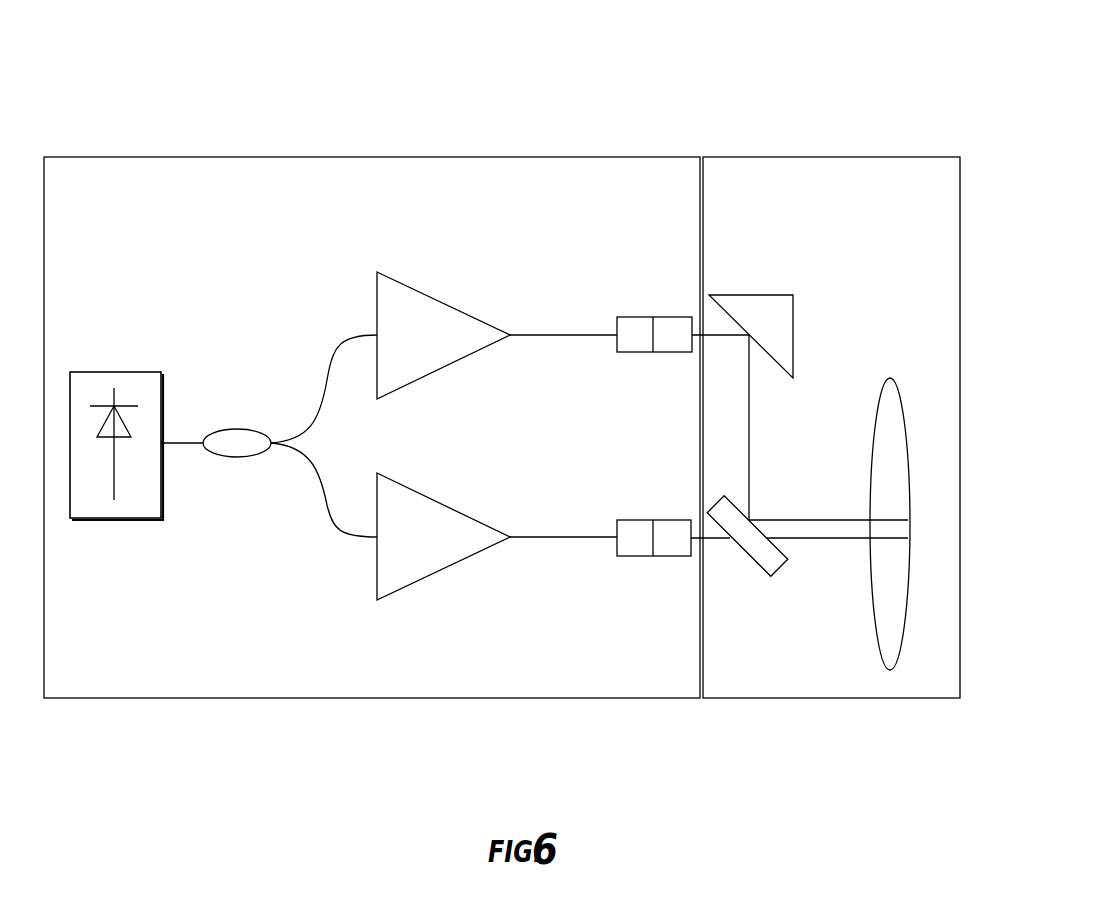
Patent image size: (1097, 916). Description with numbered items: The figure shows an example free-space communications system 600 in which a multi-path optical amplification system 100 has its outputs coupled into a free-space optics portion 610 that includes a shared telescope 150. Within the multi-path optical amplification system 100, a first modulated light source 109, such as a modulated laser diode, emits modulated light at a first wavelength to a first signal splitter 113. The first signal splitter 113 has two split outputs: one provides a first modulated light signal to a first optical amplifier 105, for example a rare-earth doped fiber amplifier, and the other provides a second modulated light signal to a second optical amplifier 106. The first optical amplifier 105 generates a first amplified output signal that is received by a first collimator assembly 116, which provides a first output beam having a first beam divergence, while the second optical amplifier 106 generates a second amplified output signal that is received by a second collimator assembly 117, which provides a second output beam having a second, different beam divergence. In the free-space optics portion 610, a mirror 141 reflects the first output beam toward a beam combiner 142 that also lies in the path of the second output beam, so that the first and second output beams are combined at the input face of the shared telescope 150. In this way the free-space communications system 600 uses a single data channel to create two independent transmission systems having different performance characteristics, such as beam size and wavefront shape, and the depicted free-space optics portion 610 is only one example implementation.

The multi-path optical amplification system 100 is at (307, 700).
The first optical amplifier 105 is at (413, 287).
The second optical amplifier 106 is at (413, 490).
The first modulated light source 109 is at (120, 520).
The first signal splitter 113 is at (240, 428).
The first collimator assembly 116 is at (638, 317).
The second collimator assembly 117 is at (638, 520).
The mirror 141 is at (770, 295).
The beam combiner 142 is at (757, 569).
The shared telescope 150 is at (905, 612).
The free-space communications system 600 is at (502, 424).
The free-space optics portion 610 is at (845, 700).